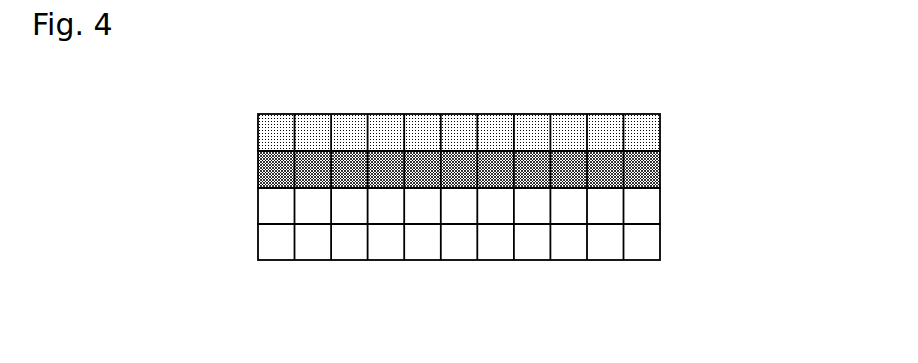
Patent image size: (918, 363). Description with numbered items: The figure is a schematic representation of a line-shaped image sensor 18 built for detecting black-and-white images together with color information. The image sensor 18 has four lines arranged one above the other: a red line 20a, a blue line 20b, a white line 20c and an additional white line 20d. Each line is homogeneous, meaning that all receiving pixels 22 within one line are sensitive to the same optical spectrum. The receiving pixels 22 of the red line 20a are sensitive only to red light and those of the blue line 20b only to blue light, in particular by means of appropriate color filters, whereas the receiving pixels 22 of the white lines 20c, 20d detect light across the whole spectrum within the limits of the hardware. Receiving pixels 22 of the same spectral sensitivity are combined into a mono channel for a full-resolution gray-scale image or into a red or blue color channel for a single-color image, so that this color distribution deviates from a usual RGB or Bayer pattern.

The image sensor 18 is at (536, 191).
The red line 20a is at (698, 142).
The blue line 20b is at (698, 177).
The white line 20c is at (698, 212).
The additional white line 20d is at (700, 248).
The receiving pixels 22 is at (640, 140).